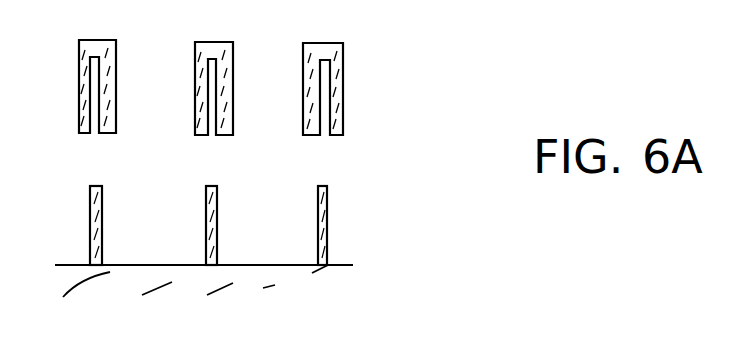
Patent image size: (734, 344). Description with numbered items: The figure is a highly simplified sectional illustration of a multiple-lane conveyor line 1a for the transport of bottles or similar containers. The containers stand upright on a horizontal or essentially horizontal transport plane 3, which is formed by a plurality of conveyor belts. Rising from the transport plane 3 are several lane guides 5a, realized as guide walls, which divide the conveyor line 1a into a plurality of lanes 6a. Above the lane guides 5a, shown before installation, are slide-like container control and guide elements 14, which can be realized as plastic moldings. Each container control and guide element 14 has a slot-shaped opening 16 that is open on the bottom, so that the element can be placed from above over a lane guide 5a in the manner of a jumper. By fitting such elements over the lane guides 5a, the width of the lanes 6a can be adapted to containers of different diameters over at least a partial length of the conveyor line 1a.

The container control and guide element 14 is at (116, 80).
The slot-shaped opening 16 is at (93, 105).
The lane guide 5a is at (102, 222).
The lane 6a is at (162, 203).
The transport plane 3 is at (67, 265).
The conveyor line 1a is at (352, 172).